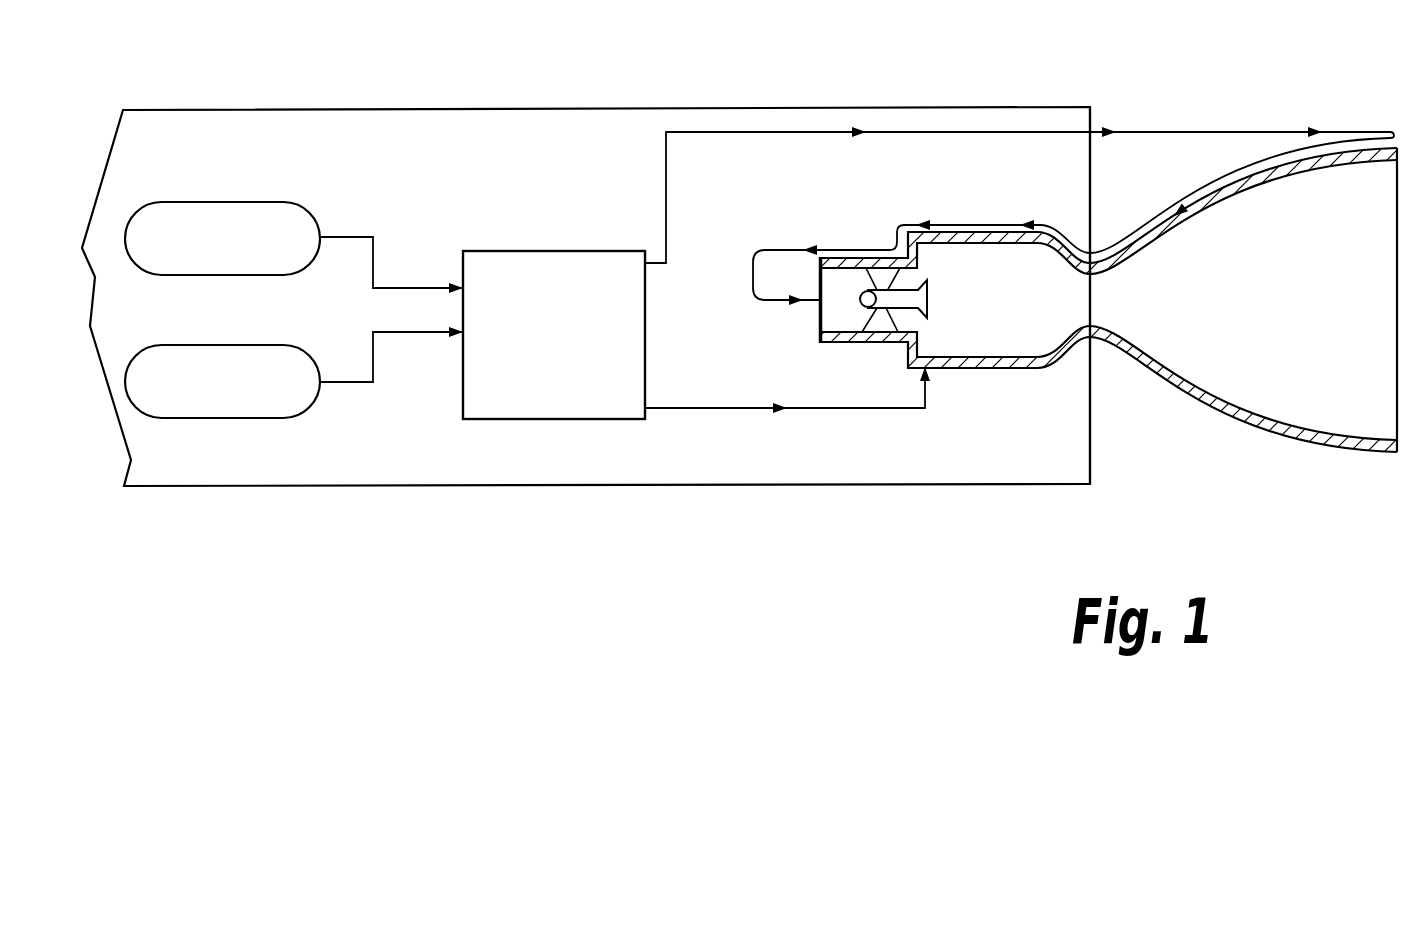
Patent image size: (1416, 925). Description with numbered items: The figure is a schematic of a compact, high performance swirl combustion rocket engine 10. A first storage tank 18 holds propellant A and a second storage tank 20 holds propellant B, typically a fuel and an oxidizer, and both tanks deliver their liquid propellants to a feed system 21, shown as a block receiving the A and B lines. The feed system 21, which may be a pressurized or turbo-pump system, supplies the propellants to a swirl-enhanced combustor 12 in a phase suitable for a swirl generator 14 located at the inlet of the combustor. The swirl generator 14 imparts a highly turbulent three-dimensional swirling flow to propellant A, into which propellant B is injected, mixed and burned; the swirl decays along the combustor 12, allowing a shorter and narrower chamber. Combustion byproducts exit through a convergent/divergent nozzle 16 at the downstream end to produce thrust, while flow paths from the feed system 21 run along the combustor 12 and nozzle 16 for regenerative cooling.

The swirl combustion rocket engine 10 is at (253, 110).
The swirl-enhanced combustor 12 is at (1007, 380).
The swirl generator 14 is at (876, 294).
The convergent/divergent nozzle 16 is at (1286, 432).
The first storage tank 18 is at (207, 252).
The second storage tank 20 is at (207, 395).
The feed system 21 is at (535, 346).